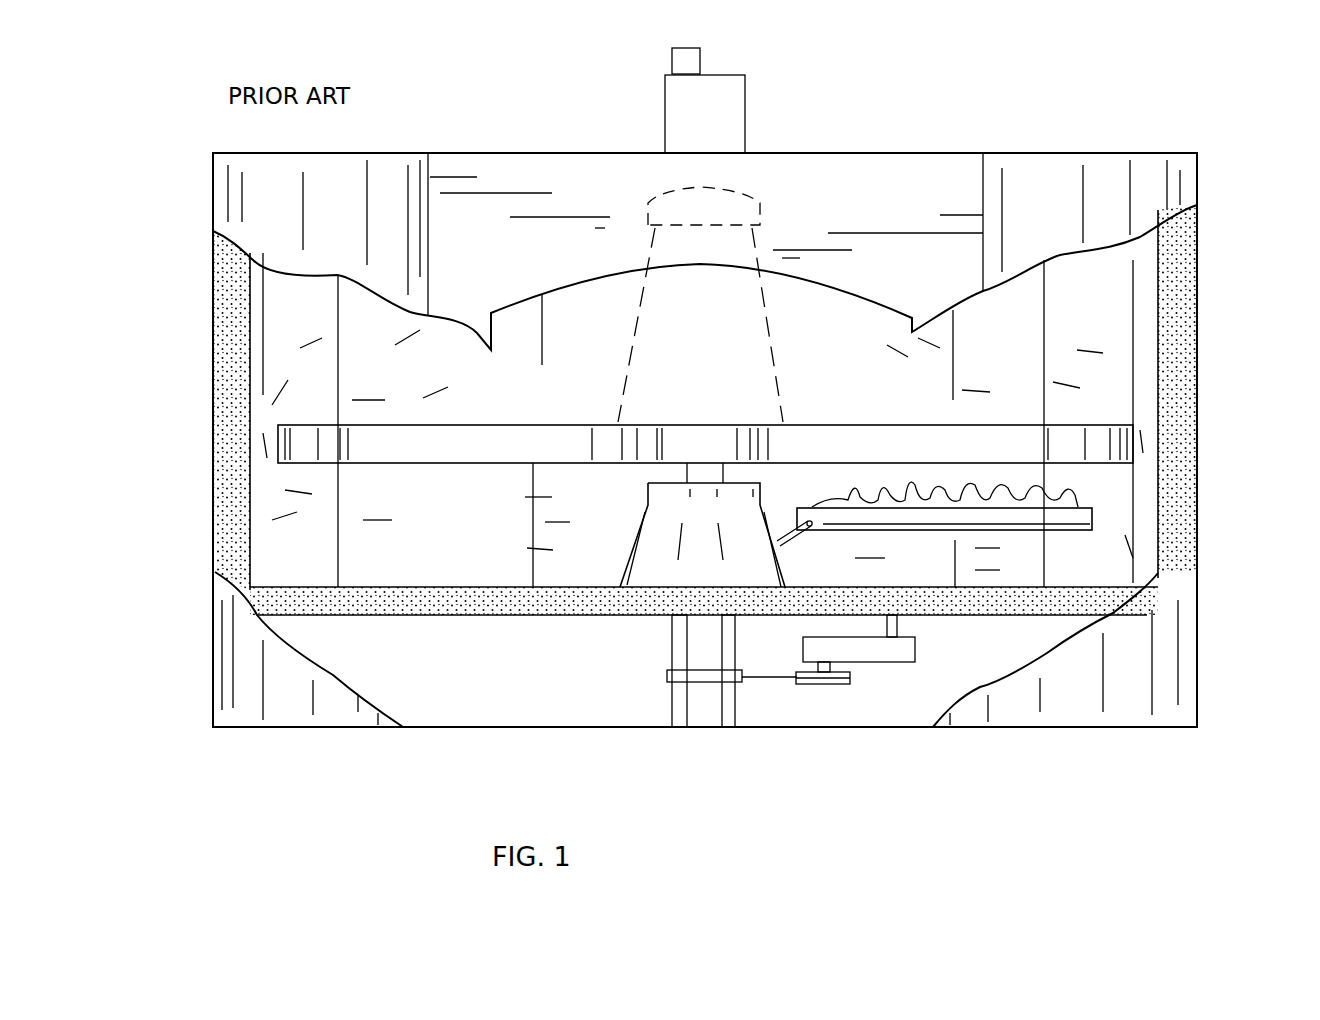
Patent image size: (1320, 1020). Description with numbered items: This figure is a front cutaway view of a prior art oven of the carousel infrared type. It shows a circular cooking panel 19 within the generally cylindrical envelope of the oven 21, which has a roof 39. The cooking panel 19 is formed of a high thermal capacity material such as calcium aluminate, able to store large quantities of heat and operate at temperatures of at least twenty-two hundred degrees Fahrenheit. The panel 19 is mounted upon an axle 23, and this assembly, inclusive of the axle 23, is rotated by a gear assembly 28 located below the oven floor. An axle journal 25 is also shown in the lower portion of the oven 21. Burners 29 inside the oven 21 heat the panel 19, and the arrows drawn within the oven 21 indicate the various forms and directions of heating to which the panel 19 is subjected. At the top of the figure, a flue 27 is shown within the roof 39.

The cooking panel 19 is at (452, 440).
The oven 21 is at (218, 212).
The axle 23 is at (697, 472).
The axle journal 25 is at (750, 572).
The flue 27 is at (692, 57).
The gear assembly 28 is at (742, 680).
The burners 29 is at (1077, 512).
The roof 39 is at (971, 147).